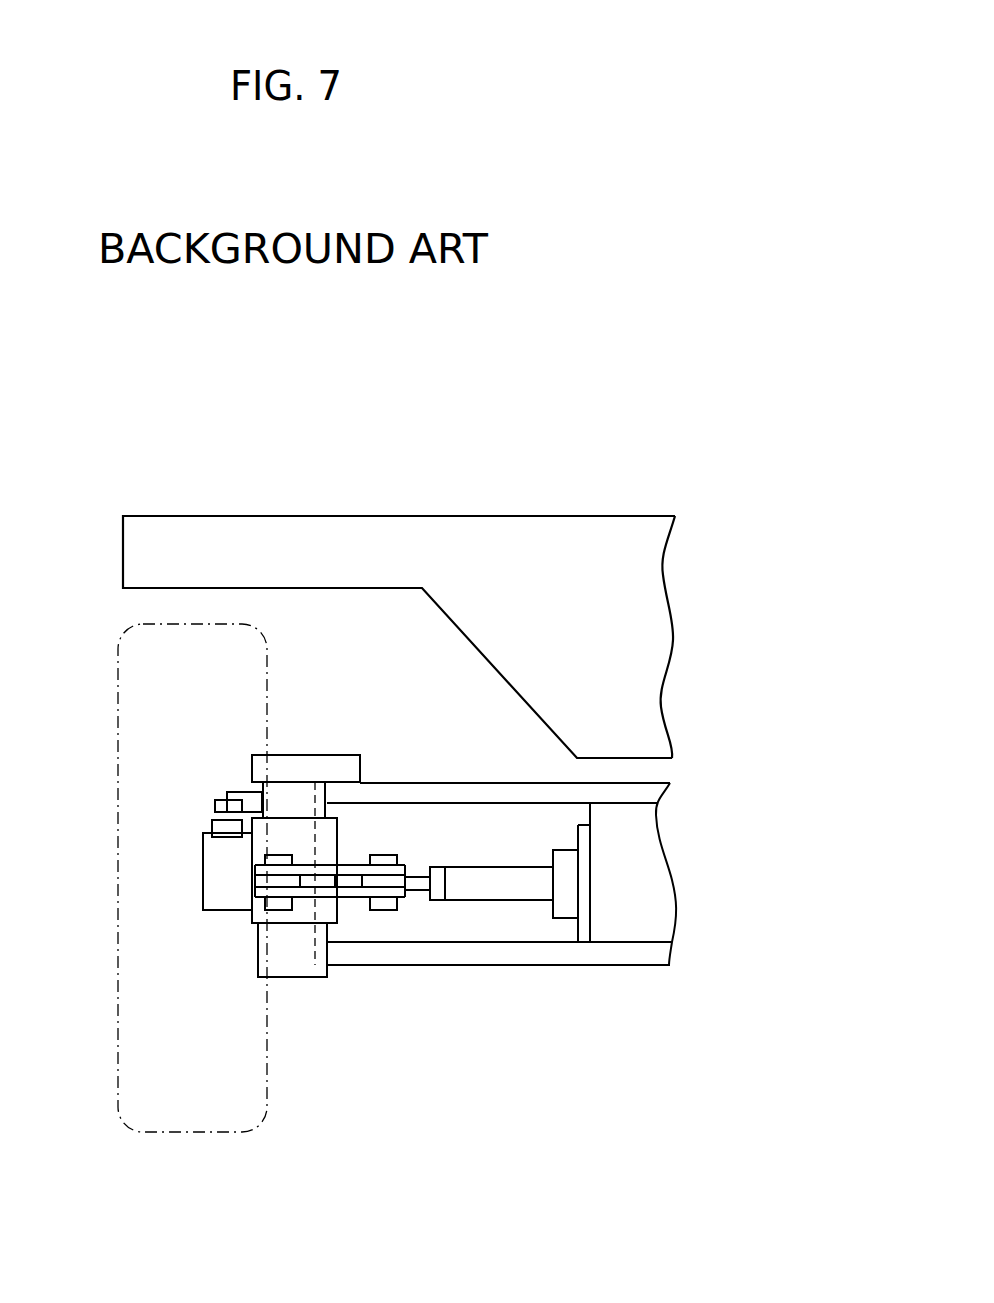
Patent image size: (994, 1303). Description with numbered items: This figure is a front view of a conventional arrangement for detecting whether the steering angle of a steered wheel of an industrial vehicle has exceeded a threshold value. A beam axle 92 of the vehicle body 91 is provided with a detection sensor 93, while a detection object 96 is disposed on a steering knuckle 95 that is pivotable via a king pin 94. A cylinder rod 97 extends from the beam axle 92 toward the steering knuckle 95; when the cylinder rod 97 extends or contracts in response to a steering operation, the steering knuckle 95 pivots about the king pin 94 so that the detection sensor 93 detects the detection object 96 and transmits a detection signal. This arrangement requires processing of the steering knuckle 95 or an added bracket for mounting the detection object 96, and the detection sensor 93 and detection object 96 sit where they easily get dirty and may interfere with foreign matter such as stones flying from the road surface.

The vehicle body 91 is at (543, 516).
The beam axle 92 is at (480, 783).
The detection sensor 93 is at (215, 806).
The king pin 94 is at (328, 952).
The steering knuckle 95 is at (337, 840).
The detection object 96 is at (212, 828).
The cylinder rod 97 is at (525, 900).